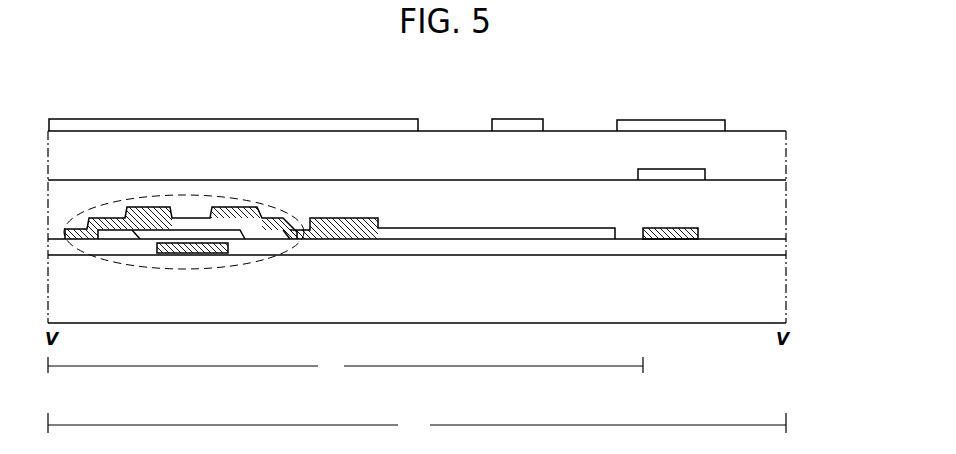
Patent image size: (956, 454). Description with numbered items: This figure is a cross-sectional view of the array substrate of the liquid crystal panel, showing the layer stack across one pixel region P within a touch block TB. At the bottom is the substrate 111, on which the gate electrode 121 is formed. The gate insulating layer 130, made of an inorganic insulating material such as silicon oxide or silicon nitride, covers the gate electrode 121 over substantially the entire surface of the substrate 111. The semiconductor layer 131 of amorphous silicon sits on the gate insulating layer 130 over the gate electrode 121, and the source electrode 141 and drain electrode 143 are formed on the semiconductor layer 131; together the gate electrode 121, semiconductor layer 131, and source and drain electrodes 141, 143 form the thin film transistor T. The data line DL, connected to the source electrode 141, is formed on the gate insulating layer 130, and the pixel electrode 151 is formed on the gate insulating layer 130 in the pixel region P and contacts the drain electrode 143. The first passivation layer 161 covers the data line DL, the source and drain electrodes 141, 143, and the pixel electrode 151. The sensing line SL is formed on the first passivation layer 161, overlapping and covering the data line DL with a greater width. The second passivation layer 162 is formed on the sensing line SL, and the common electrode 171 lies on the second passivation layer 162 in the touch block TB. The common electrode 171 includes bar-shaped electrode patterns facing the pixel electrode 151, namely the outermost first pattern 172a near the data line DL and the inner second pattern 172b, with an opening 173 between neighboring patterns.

The substrate 111 is at (775, 296).
The gate electrode 121 is at (187, 254).
The gate insulating layer 130 is at (775, 247).
The semiconductor layer 131 is at (147, 222).
The source electrode 141 is at (146, 207).
The drain electrode 143 is at (225, 207).
The pixel electrode 151 is at (486, 240).
The first passivation layer 161 is at (775, 215).
The second passivation layer 162 is at (775, 160).
The common electrode 171 is at (184, 119).
The first pattern 172a is at (668, 120).
The second pattern 172b is at (522, 120).
The opening 173 is at (452, 119).
The thin film transistor T is at (184, 227).
The sensing line SL is at (672, 181).
The data line DL is at (667, 240).
The pixel region P is at (345, 366).
The touch block TB is at (417, 424).